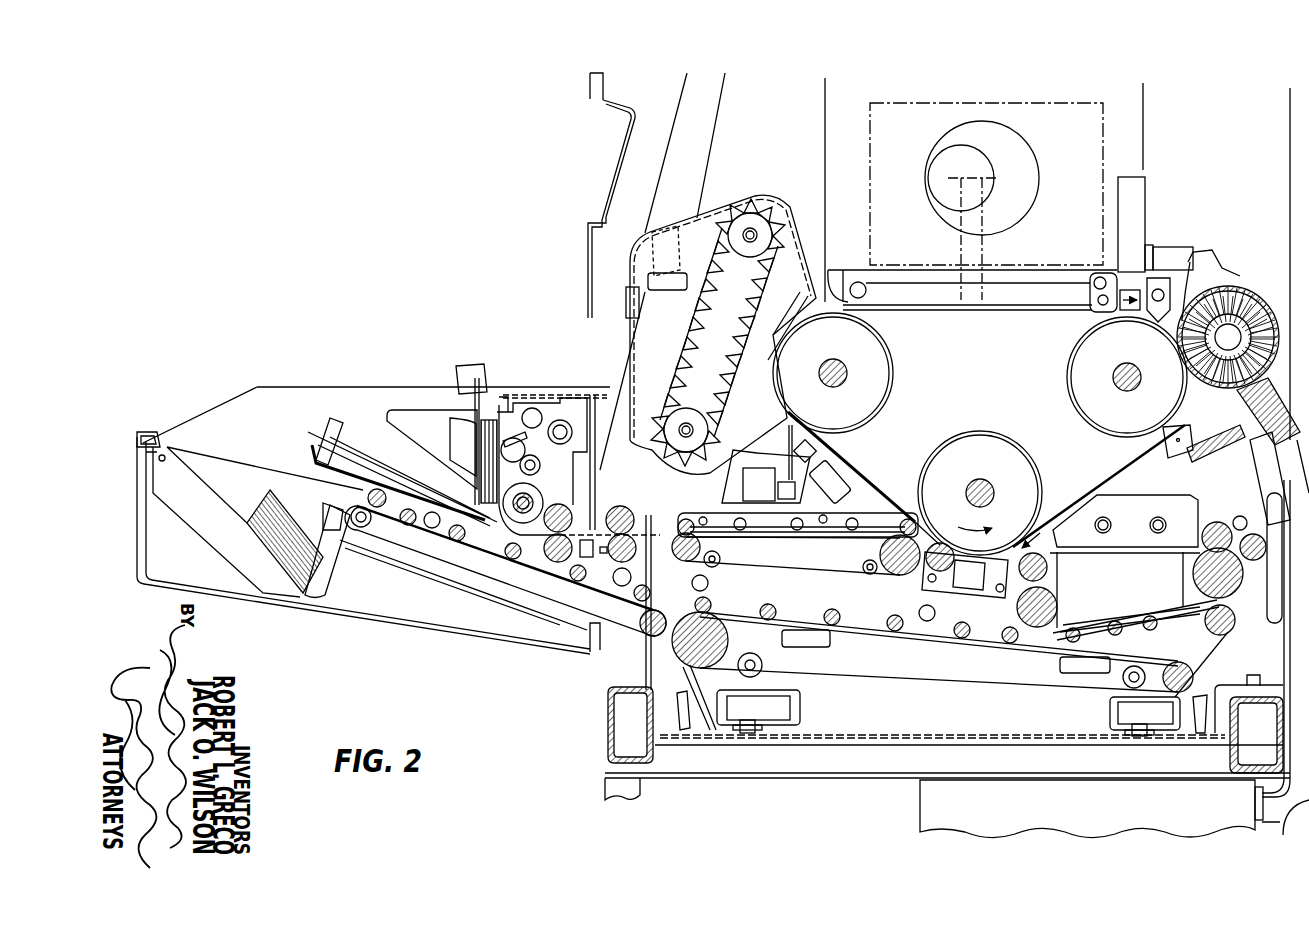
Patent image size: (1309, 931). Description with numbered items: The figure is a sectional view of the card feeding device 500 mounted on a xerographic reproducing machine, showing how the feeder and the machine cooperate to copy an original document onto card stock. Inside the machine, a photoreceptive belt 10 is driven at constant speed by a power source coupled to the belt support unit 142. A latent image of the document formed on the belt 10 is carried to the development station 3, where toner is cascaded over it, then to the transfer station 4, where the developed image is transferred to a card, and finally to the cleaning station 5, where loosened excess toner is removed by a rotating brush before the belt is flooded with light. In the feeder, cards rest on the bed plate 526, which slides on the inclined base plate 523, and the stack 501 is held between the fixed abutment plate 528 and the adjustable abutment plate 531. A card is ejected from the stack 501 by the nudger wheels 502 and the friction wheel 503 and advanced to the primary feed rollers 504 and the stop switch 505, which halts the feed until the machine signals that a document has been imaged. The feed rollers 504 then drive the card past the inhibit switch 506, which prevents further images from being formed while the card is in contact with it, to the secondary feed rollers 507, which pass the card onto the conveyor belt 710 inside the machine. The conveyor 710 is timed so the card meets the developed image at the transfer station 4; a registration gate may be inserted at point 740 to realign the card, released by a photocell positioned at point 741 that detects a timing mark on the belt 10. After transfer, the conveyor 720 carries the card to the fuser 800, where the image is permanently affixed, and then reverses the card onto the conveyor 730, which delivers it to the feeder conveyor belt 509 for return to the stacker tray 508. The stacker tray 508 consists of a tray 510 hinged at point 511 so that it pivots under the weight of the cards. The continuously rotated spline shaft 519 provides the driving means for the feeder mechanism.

The development station 3 is at (806, 214).
The belt support unit 142 is at (1072, 251).
The cleaning station 5 is at (1262, 282).
The photoreceptive belt 10 is at (1003, 302).
The feeding device 500 is at (452, 374).
The bed plate 526 is at (378, 438).
The adjustable abutment plate 531 is at (484, 380).
The fixed abutment plate 528 is at (518, 402).
The stack 501 is at (492, 412).
The nudger wheels 502 is at (540, 415).
The friction wheel 503 is at (543, 497).
The stop switch 505 is at (588, 538).
The inhibit switch 506 is at (637, 524).
The secondary feed rollers 507 is at (708, 583).
The point 741 is at (846, 485).
The point 740 is at (914, 490).
The conveyor belt 710 is at (880, 511).
The conveyor 720 is at (1120, 576).
The fuser 800 is at (1203, 508).
The transfer station 4 is at (1044, 546).
The conveyor 730 is at (912, 662).
The tray 510 is at (212, 488).
The point 511 is at (158, 430).
The base plate 523 is at (363, 446).
The stacker tray 508 is at (325, 565).
The feeder conveyor belt 509 is at (490, 611).
The primary feed rollers 504 is at (553, 568).
The spline shaft 519 is at (617, 586).